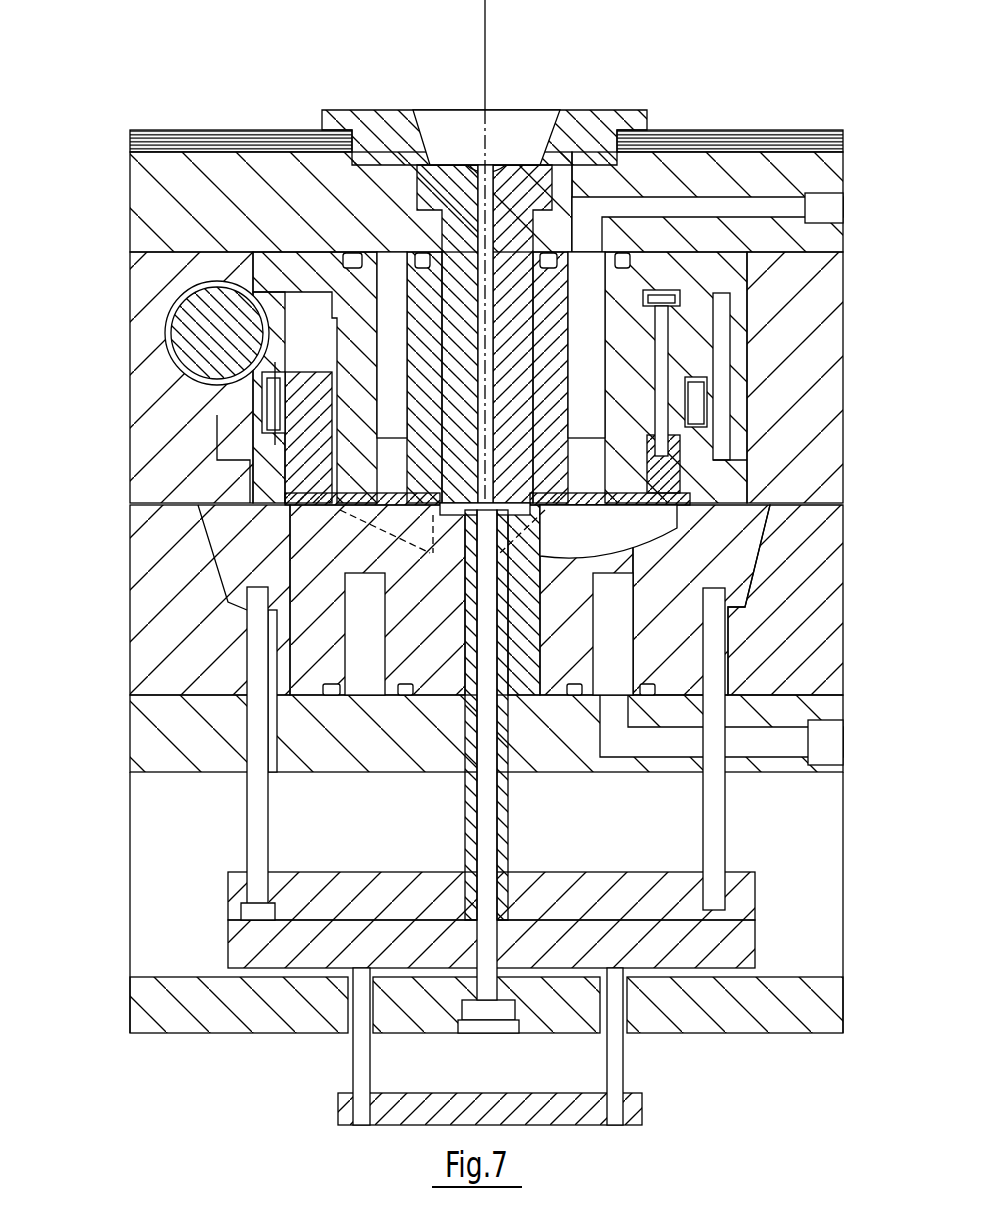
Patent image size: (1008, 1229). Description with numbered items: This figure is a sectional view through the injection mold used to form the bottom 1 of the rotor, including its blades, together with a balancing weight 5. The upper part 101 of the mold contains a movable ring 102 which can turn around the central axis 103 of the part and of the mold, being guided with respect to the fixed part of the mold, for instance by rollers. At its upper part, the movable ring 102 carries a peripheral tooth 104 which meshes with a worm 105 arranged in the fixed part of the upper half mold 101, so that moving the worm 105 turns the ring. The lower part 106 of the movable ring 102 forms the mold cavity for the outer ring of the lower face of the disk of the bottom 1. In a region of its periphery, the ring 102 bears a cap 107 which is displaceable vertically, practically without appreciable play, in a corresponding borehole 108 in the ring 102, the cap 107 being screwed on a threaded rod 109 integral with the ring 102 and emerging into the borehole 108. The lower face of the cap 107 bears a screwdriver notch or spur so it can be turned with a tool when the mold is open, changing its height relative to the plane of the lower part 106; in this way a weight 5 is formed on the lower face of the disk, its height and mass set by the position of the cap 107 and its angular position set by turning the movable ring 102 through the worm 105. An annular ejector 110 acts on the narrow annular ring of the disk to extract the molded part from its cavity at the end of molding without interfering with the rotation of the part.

The bottom 1 is at (705, 565).
The balancing weight 5 is at (700, 520).
The upper part of the mold 101 is at (118, 388).
The movable ring 102 is at (265, 430).
The central axis 103 is at (488, 52).
The peripheral tooth 104 is at (165, 342).
The worm 105 is at (185, 320).
The lower part of the movable ring 106 is at (287, 490).
The cap 107 is at (708, 488).
The borehole 108 is at (695, 427).
The threaded rod 109 is at (660, 335).
The annular ejector 110 is at (240, 585).